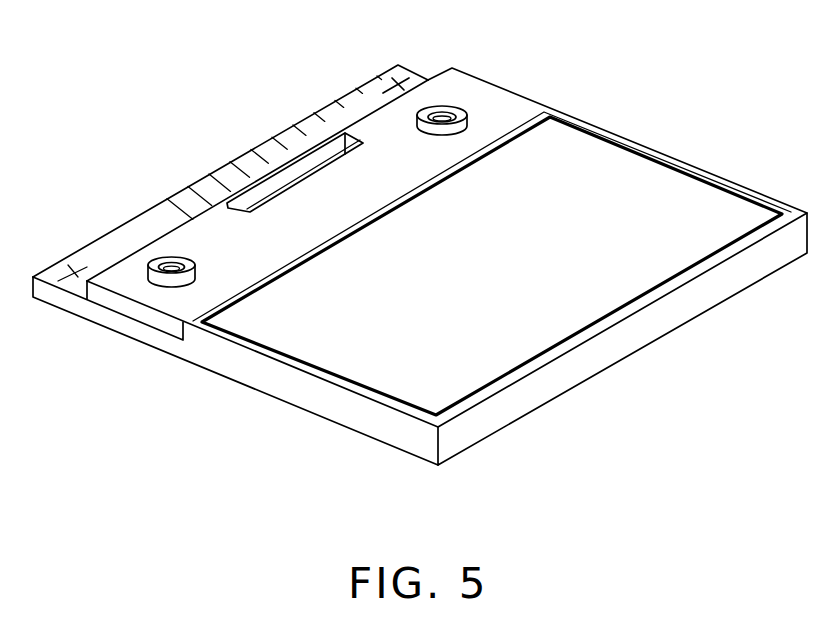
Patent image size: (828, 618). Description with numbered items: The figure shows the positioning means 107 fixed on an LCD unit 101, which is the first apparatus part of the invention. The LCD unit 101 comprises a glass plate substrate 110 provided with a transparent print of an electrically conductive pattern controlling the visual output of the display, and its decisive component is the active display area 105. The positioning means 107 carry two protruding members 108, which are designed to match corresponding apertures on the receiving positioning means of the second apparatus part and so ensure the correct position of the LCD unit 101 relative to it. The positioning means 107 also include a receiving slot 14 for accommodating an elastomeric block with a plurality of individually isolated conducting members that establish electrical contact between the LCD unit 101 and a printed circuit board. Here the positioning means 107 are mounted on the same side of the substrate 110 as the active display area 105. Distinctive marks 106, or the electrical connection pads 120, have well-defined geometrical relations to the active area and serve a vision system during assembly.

The receiving slot 14 is at (297, 163).
The LCD unit 101 is at (652, 340).
The active display area 105 is at (635, 182).
The distinctive marks 106 is at (403, 80).
The positioning means 107 is at (398, 135).
The protruding members 108 is at (457, 109).
The glass plate substrate 110 is at (252, 377).
The pads 120 is at (177, 207).